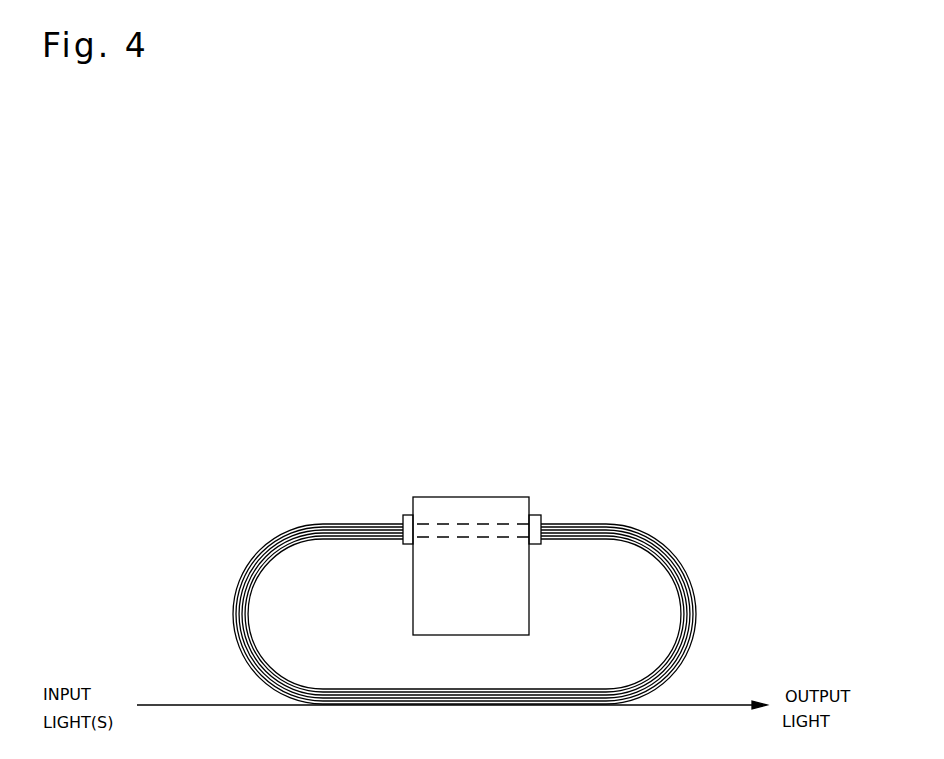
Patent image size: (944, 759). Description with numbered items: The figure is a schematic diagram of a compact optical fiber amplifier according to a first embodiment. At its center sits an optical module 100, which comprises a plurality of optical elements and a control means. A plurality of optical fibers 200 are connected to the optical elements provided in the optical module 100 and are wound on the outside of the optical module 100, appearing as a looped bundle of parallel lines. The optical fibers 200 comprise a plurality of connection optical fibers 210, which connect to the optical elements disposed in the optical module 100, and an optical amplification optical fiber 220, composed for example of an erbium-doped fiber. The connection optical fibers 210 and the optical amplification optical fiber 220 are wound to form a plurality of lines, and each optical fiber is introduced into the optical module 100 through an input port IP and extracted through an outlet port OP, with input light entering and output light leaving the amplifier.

The optical module 100 is at (487, 503).
The optical fibers 200 is at (414, 598).
The connection optical fibers 210 is at (272, 547).
The optical amplification optical fiber 220 is at (277, 553).
The outlet port OP is at (407, 515).
The input port IP is at (538, 515).